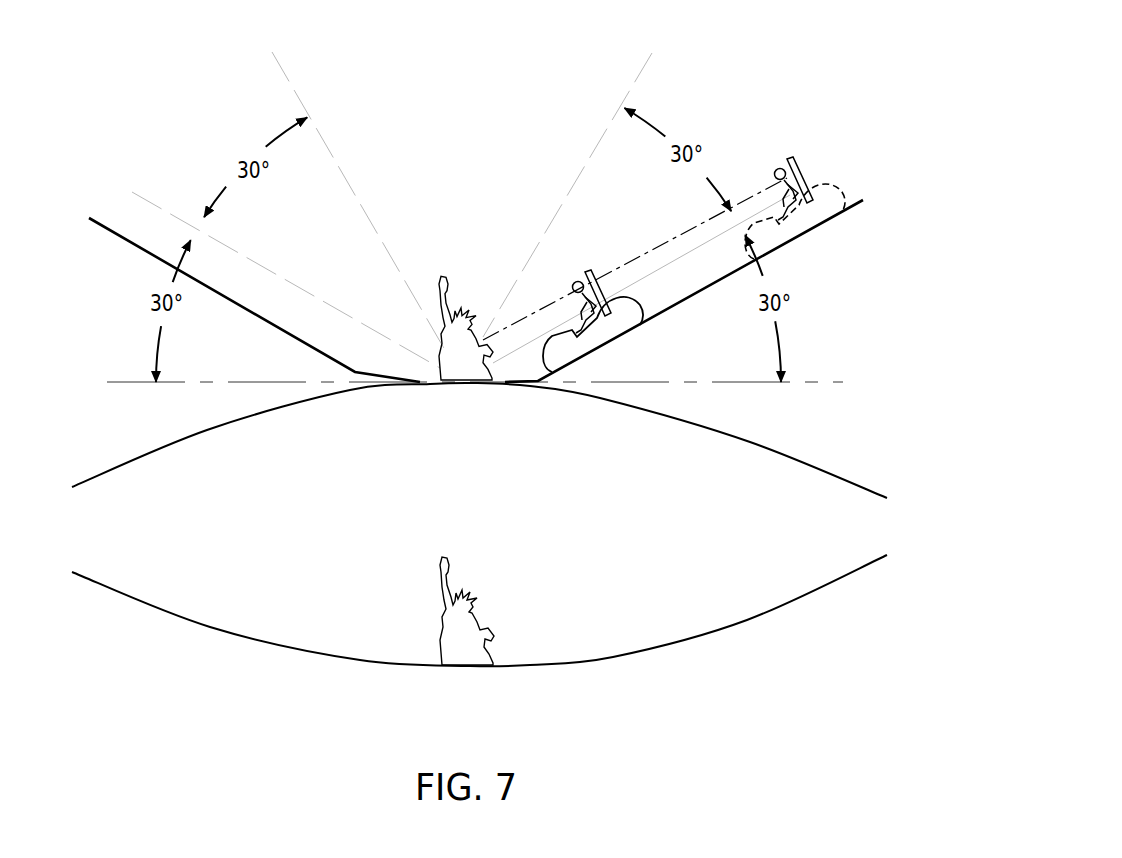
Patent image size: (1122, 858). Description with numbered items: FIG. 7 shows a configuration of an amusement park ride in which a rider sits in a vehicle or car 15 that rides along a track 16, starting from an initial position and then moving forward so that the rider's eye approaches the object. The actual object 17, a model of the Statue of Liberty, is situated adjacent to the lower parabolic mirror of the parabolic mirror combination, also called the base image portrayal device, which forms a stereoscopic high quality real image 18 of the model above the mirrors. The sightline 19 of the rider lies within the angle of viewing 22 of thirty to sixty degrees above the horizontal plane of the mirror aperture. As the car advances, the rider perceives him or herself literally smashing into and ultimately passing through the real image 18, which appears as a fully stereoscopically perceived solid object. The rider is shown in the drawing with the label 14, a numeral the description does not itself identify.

The viewer 14 is at (580, 282).
The vehicle or car 15 is at (607, 288).
The track 16 is at (125, 240).
The actual object 17 is at (495, 646).
The real image 18 is at (443, 276).
The sightline 19 is at (750, 187).
The angle of viewing 22 is at (313, 234).